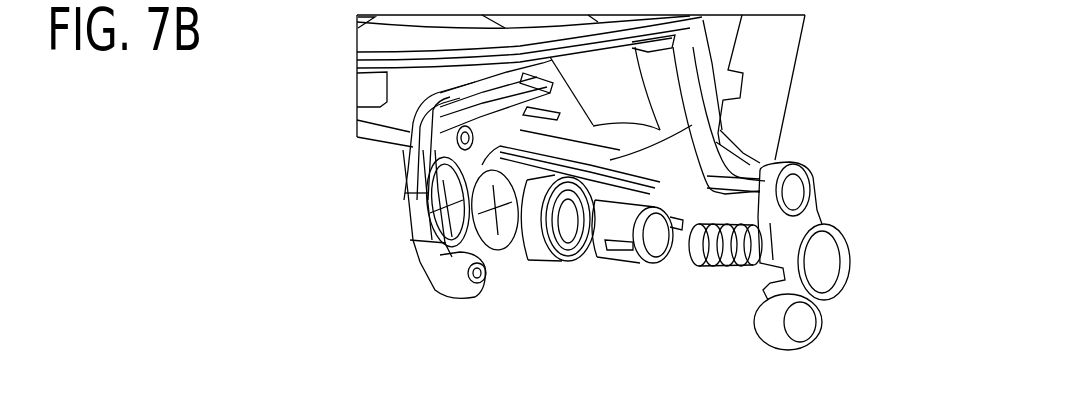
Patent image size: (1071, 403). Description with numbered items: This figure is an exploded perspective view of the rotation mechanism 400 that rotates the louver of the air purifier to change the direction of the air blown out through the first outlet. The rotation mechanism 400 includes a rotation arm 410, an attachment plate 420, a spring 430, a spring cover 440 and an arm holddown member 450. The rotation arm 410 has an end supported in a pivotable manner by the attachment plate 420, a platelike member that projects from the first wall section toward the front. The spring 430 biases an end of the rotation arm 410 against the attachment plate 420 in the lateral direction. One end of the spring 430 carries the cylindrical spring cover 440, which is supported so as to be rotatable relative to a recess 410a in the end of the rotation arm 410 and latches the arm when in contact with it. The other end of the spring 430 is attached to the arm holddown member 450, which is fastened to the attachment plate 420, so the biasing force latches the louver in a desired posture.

The rotation mechanism 400 is at (364, 189).
The rotation arm 410 is at (538, 247).
The recess 410a is at (575, 237).
The attachment plate 420 is at (427, 262).
The spring 430 is at (717, 263).
The spring cover 440 is at (633, 263).
The arm holddown member 450 is at (831, 284).